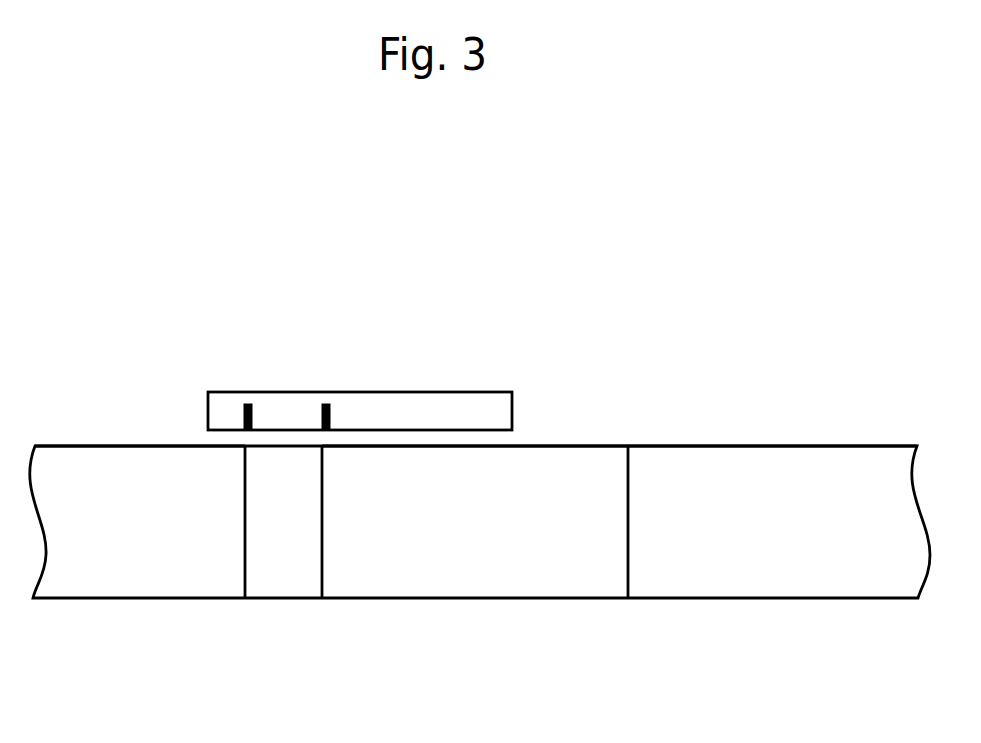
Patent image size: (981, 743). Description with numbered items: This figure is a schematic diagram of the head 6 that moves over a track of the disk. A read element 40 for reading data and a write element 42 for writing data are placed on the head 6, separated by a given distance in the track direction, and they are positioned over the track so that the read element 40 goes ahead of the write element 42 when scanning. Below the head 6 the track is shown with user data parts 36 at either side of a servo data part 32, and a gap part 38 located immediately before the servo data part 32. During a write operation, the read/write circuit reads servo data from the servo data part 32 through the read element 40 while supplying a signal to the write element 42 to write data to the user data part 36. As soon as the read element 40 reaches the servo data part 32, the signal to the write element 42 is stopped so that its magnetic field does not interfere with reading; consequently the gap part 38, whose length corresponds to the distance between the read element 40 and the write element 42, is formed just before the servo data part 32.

The head 6 is at (452, 402).
The write element 42 is at (243, 408).
The read element 40 is at (330, 406).
The gap part 38 is at (283, 583).
The servo data part 32 is at (474, 583).
The user data part 36 is at (133, 583).